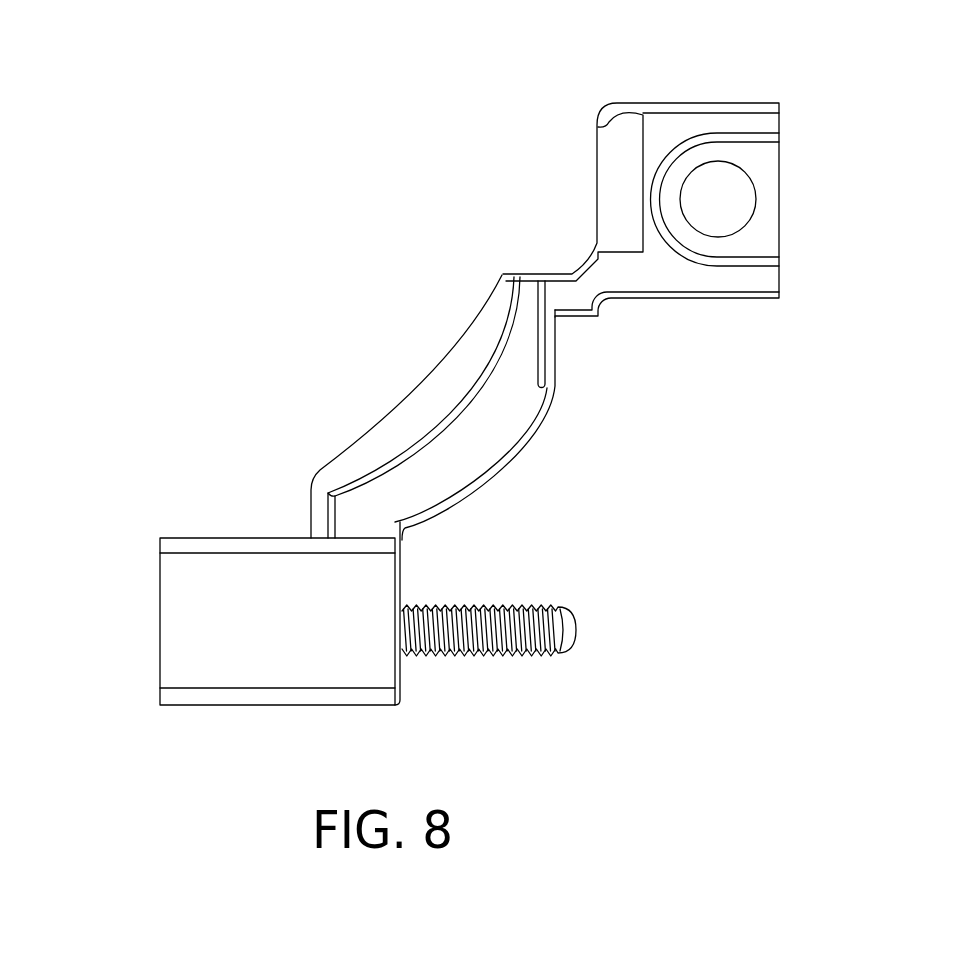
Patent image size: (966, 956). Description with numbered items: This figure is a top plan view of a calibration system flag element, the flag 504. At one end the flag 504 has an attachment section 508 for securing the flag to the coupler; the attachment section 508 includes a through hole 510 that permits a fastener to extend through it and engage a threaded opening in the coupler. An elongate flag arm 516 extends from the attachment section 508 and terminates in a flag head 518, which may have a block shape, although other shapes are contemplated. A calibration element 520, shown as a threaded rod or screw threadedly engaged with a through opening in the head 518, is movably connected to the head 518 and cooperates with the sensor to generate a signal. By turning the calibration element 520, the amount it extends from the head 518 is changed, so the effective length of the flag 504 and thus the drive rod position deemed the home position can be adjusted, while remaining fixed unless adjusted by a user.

The flag 504 is at (488, 393).
The attachment section 508 is at (671, 125).
The through hole 510 is at (727, 193).
The flag arm 516 is at (443, 387).
The flag head 518 is at (160, 668).
The calibration element 520 is at (490, 657).